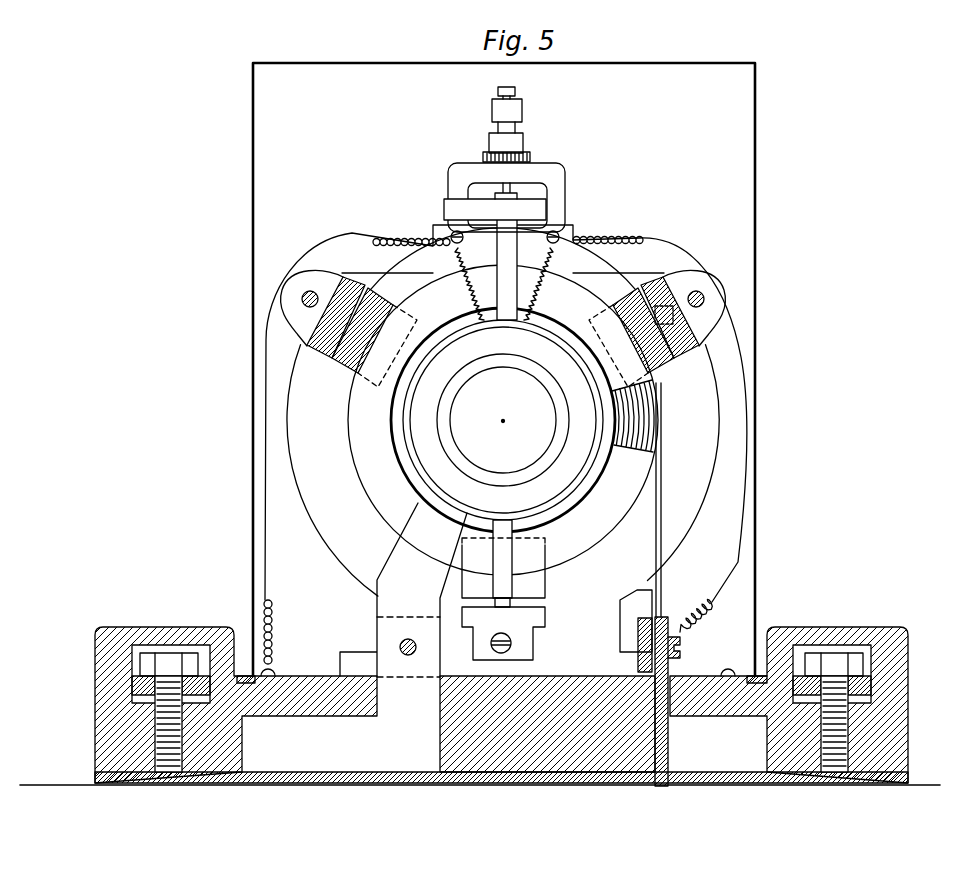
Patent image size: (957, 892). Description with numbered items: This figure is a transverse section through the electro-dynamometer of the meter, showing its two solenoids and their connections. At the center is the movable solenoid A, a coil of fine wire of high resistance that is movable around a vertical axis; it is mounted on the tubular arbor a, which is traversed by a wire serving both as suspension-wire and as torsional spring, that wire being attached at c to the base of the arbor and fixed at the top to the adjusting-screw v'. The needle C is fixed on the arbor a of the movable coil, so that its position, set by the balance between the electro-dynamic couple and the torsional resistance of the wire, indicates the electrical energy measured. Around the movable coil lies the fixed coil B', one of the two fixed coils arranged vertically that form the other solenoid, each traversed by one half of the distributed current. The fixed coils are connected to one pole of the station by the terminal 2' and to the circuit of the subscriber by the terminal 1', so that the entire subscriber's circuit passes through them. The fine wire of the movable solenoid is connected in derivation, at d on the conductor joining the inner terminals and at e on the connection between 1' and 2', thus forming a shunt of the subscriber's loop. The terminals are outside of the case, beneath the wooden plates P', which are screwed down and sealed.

The movable solenoid A is at (503, 420).
The tubular arbor a is at (504, 408).
The fixed coil B' is at (503, 401).
The needle C is at (508, 204).
The attachment point of wire to arbor base c is at (503, 624).
The derivation connection point d is at (506, 413).
The derivation connection point e is at (488, 584).
The adjusting-screw v' is at (509, 120).
The terminal 1' is at (171, 687).
The terminal 2' is at (832, 687).
The wooden plates P' is at (498, 705).